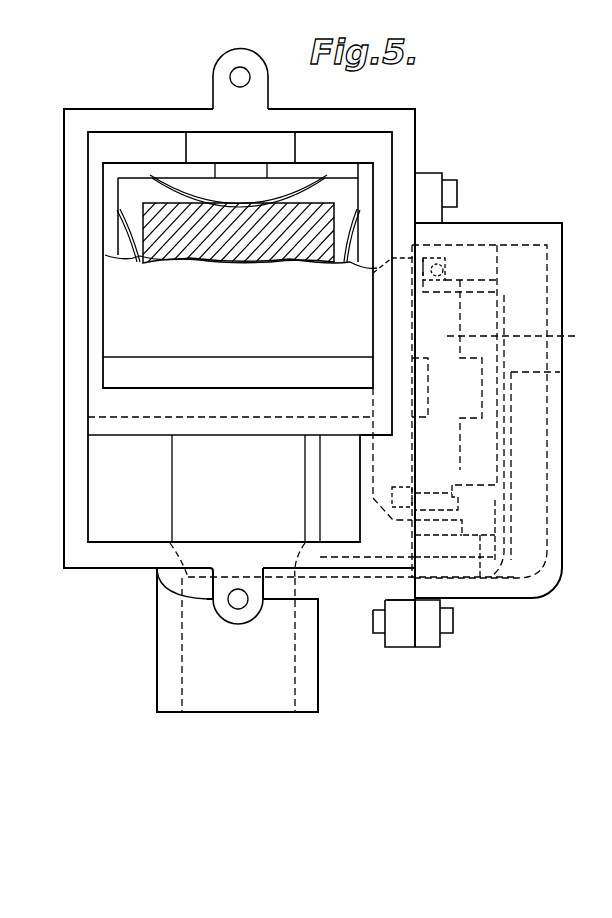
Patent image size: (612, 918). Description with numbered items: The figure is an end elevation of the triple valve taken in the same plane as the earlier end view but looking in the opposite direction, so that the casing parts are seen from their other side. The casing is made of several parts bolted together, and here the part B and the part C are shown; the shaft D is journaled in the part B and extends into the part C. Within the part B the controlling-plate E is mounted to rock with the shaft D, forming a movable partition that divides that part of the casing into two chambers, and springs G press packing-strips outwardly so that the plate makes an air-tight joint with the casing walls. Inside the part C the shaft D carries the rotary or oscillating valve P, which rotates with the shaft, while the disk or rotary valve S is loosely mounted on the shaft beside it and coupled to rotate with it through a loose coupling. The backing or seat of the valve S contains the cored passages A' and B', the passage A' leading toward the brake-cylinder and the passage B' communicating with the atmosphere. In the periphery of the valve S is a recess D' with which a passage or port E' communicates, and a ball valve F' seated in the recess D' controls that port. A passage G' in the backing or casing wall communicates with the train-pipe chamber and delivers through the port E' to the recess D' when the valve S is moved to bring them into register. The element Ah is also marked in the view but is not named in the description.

The outer casing B is at (261, 348).
The inner wall of housing B' is at (510, 411).
The housing C is at (562, 301).
The strip S is at (524, 332).
The chamber E is at (240, 260).
The bottom plate D is at (238, 340).
The lining F' is at (273, 206).
The block P is at (238, 261).
The spring G is at (195, 171).
The spring contact G' is at (387, 439).
The contact D' is at (441, 345).
The contact piece E' is at (483, 379).
The compartment A' is at (240, 337).
The base plate Ah is at (480, 560).